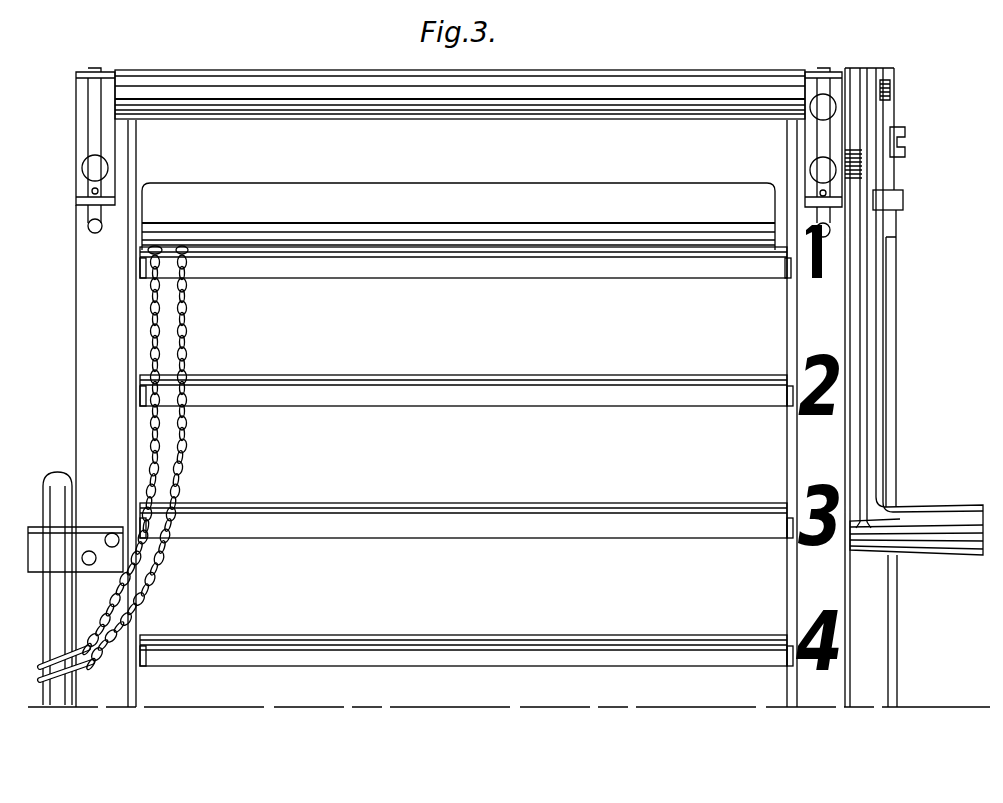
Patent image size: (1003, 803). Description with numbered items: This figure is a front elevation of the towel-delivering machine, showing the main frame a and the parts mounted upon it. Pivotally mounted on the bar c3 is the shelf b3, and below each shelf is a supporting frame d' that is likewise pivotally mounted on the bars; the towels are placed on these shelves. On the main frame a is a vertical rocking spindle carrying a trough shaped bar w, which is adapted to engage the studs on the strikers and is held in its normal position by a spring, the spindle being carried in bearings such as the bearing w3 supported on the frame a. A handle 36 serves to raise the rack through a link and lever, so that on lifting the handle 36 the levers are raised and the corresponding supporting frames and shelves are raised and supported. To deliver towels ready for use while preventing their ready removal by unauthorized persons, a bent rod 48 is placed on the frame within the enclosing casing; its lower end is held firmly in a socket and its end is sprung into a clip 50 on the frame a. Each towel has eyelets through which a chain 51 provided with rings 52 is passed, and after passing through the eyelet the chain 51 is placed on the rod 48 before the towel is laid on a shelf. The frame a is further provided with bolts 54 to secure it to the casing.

The bolts 54 is at (95, 128).
The main frame a is at (107, 372).
The trough shaped bar w is at (870, 612).
The bearing w3 is at (905, 200).
The handle 36 is at (925, 510).
The chain 51 is at (150, 587).
The clip 50 is at (37, 527).
The bent rod 48 is at (60, 608).
The rings 52 is at (40, 667).
The shelf b3 is at (462, 637).
The bar c3 is at (142, 660).
The supporting frame d' is at (463, 676).